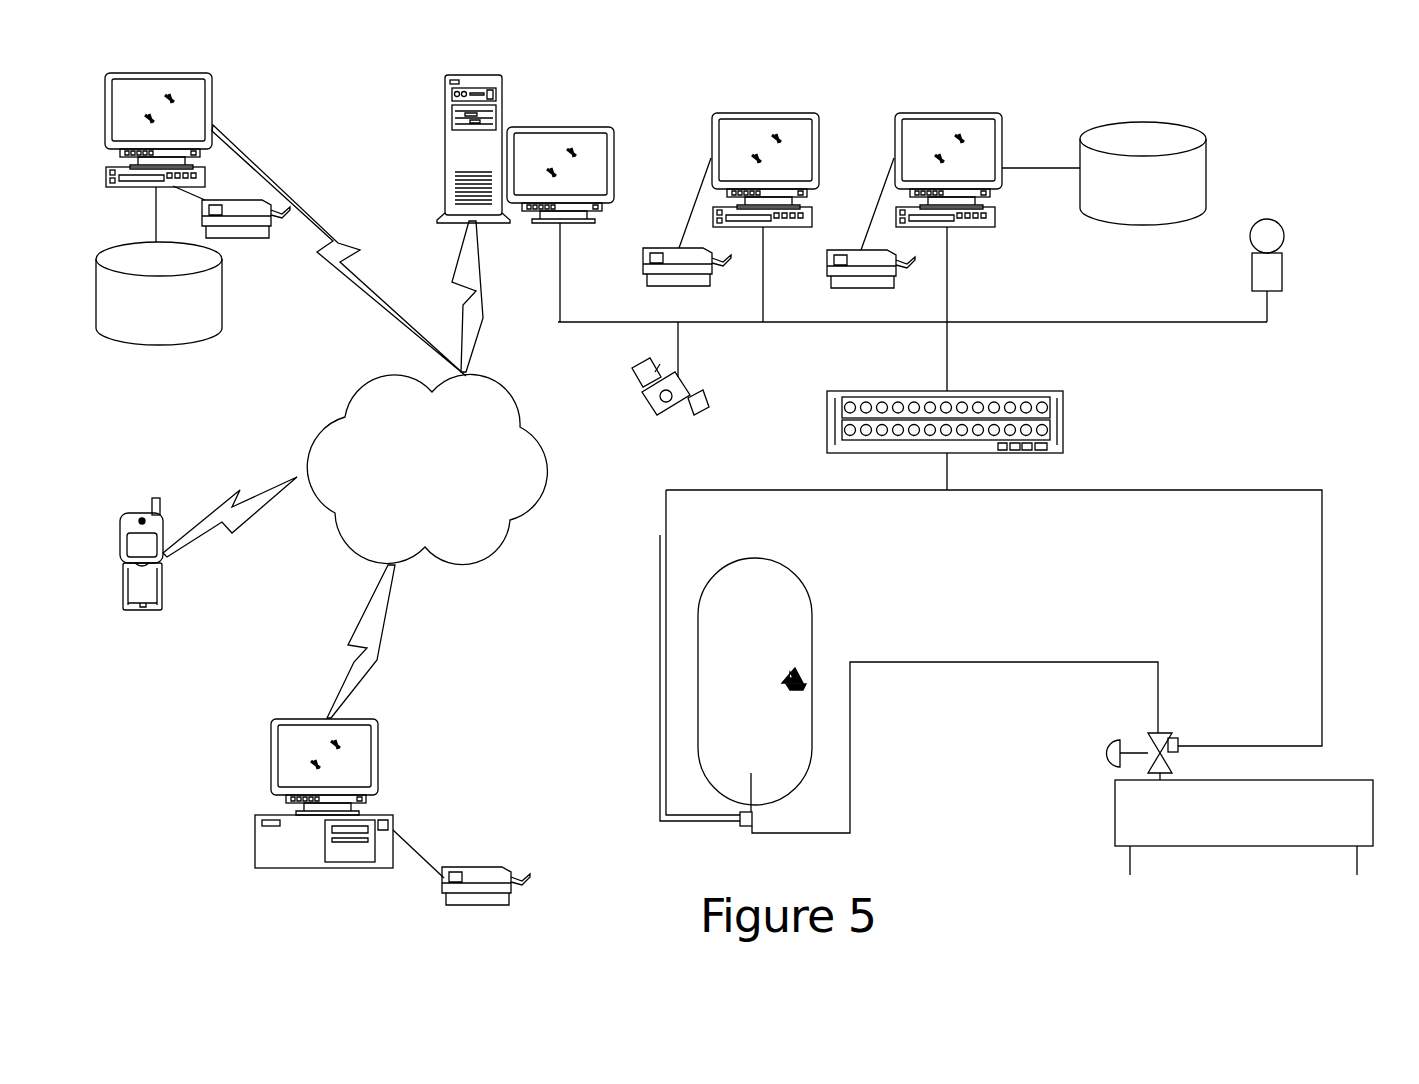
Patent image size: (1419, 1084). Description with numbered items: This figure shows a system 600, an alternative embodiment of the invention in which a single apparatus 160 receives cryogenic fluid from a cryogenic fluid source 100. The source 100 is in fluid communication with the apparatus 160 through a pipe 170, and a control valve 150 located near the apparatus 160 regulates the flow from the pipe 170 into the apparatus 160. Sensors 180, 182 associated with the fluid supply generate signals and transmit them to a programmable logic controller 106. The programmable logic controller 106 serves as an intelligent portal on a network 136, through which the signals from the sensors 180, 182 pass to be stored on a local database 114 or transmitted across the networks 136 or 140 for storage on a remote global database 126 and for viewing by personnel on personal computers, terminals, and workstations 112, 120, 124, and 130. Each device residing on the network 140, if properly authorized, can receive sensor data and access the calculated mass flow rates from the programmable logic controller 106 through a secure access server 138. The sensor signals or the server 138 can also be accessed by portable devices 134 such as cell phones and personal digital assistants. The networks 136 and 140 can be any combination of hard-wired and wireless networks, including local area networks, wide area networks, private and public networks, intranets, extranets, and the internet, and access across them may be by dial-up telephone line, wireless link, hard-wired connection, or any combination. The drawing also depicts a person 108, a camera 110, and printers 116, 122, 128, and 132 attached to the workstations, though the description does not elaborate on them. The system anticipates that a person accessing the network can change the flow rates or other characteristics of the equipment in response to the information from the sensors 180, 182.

The cryogenic fluid source 100 is at (800, 578).
The programmable logic controller 106 is at (1063, 412).
The user 108 is at (1270, 218).
The camera 110 is at (690, 393).
The workstation 112 is at (1000, 137).
The local database 114 is at (1163, 122).
The printer 116 is at (857, 290).
The workstation 120 is at (817, 113).
The printer 122 is at (683, 287).
The workstation 124 is at (212, 104).
The remote global database 126 is at (222, 298).
The printer 128 is at (243, 236).
The workstation 130 is at (378, 743).
The printer 132 is at (473, 867).
The portable device 134 is at (137, 512).
The network 136 is at (1057, 322).
The secure access server 138 is at (613, 137).
The network 140 is at (507, 393).
The control valve 150 is at (1105, 748).
The apparatus 160 is at (1115, 812).
The pipe 170 is at (1083, 663).
The sensor 180 is at (1202, 744).
The sensor 182 is at (747, 828).
The system 600 is at (1277, 141).